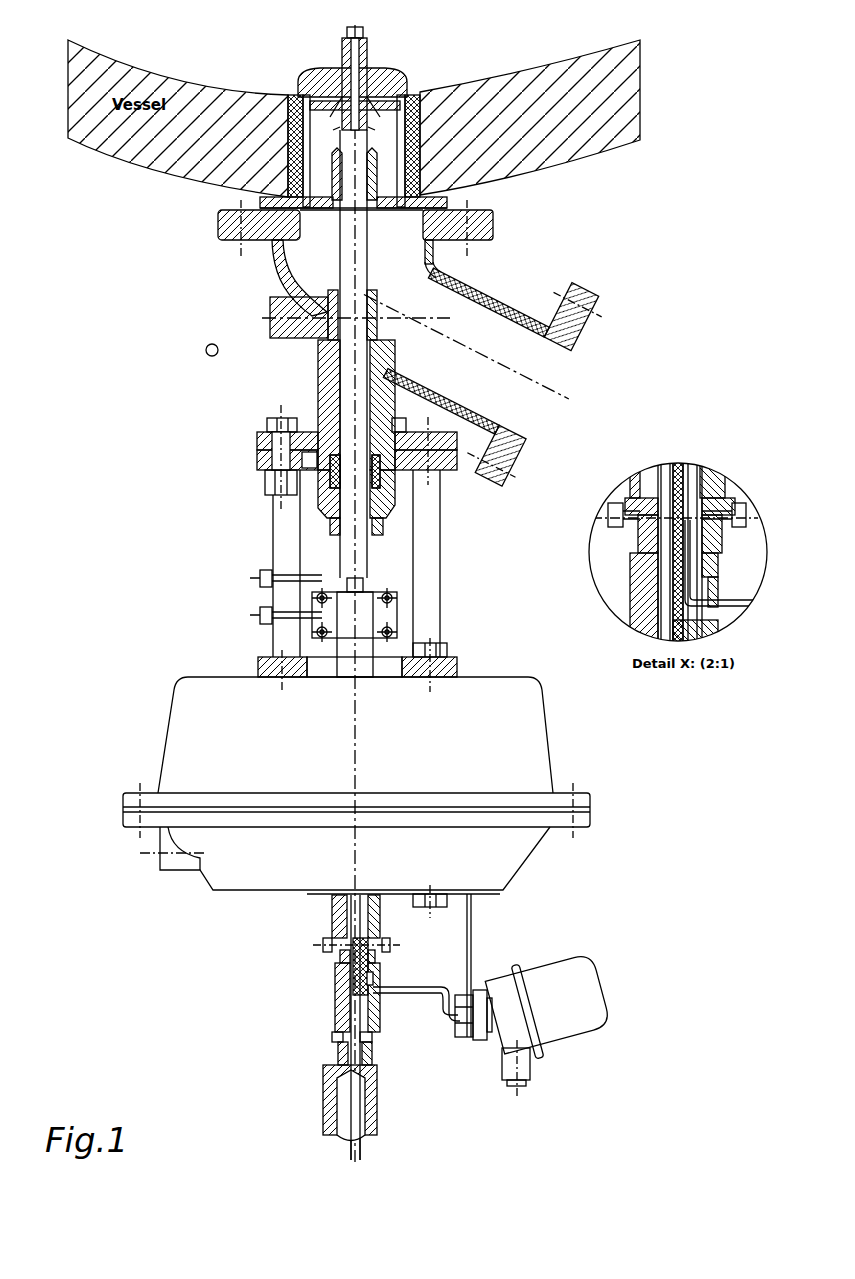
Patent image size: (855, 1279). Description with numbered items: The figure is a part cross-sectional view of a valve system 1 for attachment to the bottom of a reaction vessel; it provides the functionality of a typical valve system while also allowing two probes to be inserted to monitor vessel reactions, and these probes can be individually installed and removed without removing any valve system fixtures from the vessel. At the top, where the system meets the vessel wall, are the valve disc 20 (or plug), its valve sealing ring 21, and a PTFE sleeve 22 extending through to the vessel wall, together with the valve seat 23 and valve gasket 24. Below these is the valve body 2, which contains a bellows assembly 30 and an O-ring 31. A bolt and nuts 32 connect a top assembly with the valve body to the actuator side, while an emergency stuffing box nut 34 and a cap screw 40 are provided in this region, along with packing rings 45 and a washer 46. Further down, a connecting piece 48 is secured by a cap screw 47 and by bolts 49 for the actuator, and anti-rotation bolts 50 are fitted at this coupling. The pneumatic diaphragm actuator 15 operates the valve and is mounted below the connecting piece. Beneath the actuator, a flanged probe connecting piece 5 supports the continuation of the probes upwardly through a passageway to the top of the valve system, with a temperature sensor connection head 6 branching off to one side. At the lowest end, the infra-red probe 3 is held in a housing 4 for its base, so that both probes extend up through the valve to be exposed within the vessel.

The valve system 1 is at (730, 131).
The valve body 2 is at (478, 288).
The infra-red probe 3 is at (346, 1097).
The housing for base of the infra-red probe 4 is at (378, 1108).
The probe connecting piece 5 is at (335, 990).
The temperature sensor connection head 6 is at (603, 1012).
The pneumatic diaphragm actuator 15 is at (156, 730).
The valve disc 20 is at (405, 63).
The valve sealing ring 21 is at (424, 90).
The PTFE sleeve 22 is at (288, 115).
The valve seat 23 is at (463, 190).
The valve gasket 24 is at (490, 212).
The bellows assembly 30 is at (324, 350).
The O-ring 31 is at (316, 420).
The bolt and nuts 32 is at (263, 420).
The emergency stuffing box nut 34 is at (336, 520).
The cap screw 40 is at (398, 487).
The packing rings 45 is at (403, 468).
The washer 46 is at (337, 490).
The cap screw for connecting piece 47 is at (385, 590).
The connecting piece 48 is at (400, 618).
The bolts for actuator 49 is at (447, 648).
The anti-rotation bolts 50 is at (237, 615).